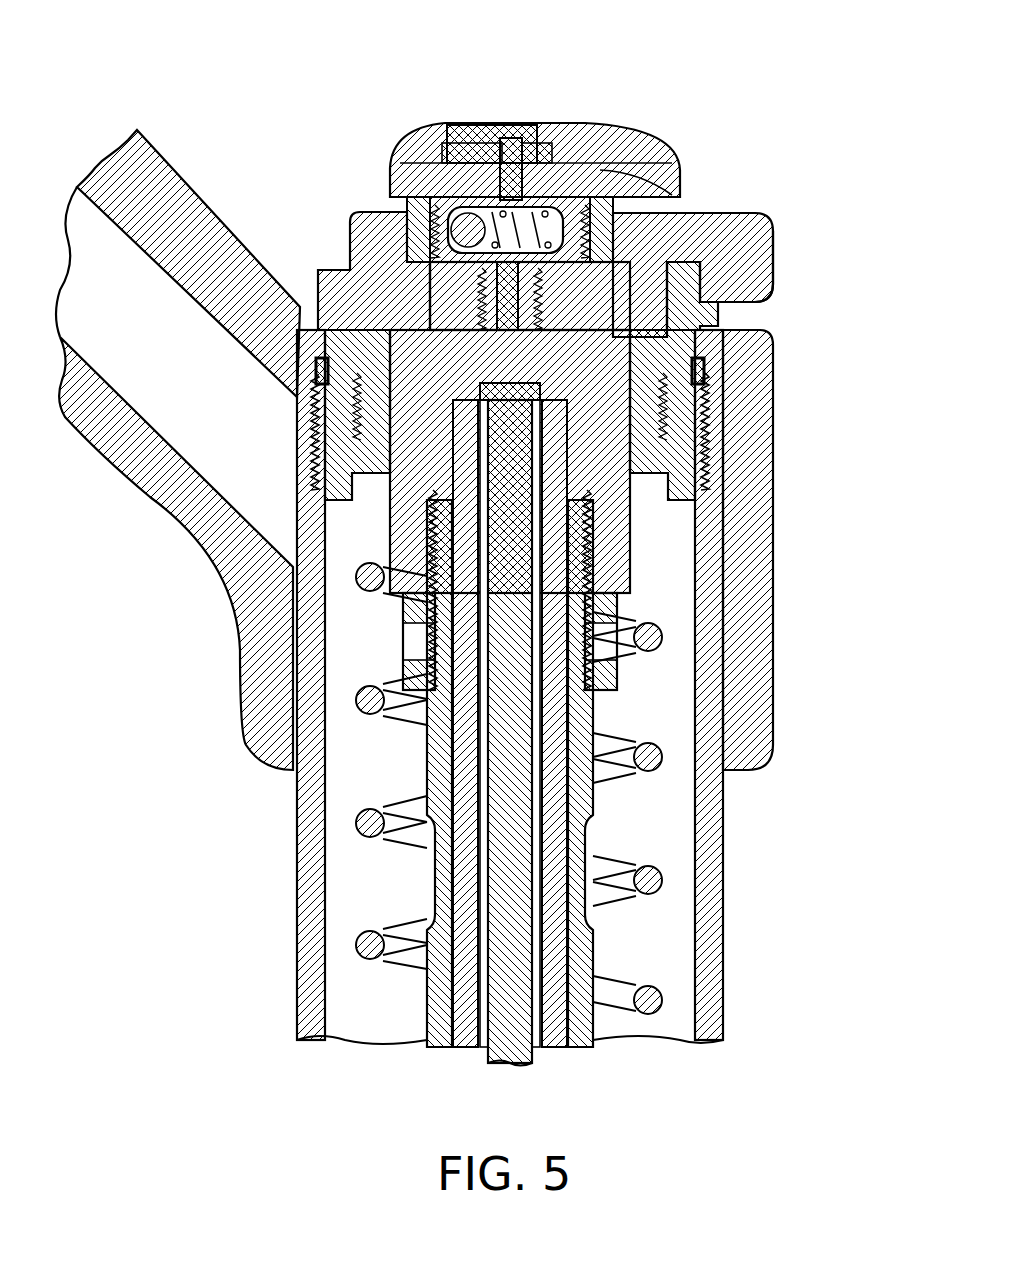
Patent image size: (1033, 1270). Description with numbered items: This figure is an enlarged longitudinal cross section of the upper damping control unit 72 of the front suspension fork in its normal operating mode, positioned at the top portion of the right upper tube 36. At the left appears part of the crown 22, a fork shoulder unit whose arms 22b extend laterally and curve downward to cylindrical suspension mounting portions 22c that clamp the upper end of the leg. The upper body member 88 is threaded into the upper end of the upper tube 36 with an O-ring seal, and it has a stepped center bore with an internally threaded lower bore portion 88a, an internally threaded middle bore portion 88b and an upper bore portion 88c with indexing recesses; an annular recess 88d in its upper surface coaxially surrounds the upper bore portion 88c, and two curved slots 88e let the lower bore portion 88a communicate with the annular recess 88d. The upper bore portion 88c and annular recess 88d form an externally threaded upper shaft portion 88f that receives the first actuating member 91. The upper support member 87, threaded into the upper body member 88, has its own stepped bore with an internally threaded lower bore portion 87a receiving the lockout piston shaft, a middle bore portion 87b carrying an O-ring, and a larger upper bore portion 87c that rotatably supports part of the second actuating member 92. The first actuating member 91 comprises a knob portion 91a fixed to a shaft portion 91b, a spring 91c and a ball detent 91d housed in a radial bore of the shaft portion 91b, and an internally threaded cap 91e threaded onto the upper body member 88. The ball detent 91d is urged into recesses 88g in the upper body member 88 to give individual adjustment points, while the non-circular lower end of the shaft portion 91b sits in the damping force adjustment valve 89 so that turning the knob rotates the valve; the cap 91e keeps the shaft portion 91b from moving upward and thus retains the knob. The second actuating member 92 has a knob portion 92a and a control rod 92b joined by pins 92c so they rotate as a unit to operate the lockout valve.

The crown 22 is at (215, 205).
The arms 22b is at (150, 495).
The suspension mounting portions 22c is at (774, 640).
The right upper tube 36 is at (723, 1000).
The upper damping control unit 72 is at (755, 152).
The upper support member 87 is at (634, 562).
The lower bore portion 87a is at (430, 545).
The middle bore portion 87b is at (375, 480).
The upper bore portion 87c is at (318, 415).
The upper body member 88 is at (722, 318).
The lower bore portion 88a is at (640, 460).
The middle bore portion 88b is at (495, 300).
The upper bore portion 88c is at (360, 215).
The annular recess 88d is at (330, 340).
The curved slots 88e is at (316, 372).
The upper shaft portion 88f is at (655, 170).
The recesses 88g is at (548, 222).
The damping force adjustment valve 89 is at (515, 1045).
The first actuating member 91 is at (630, 152).
The knob portion 91a is at (545, 125).
The shaft portion 91b is at (530, 160).
The spring 91c is at (512, 170).
The ball detent 91d is at (455, 165).
The internally threaded cap 91e is at (680, 213).
The second actuating member 92 is at (777, 215).
The knob portion 92a is at (775, 262).
The control rod 92b is at (540, 770).
The pins 92c is at (680, 405).